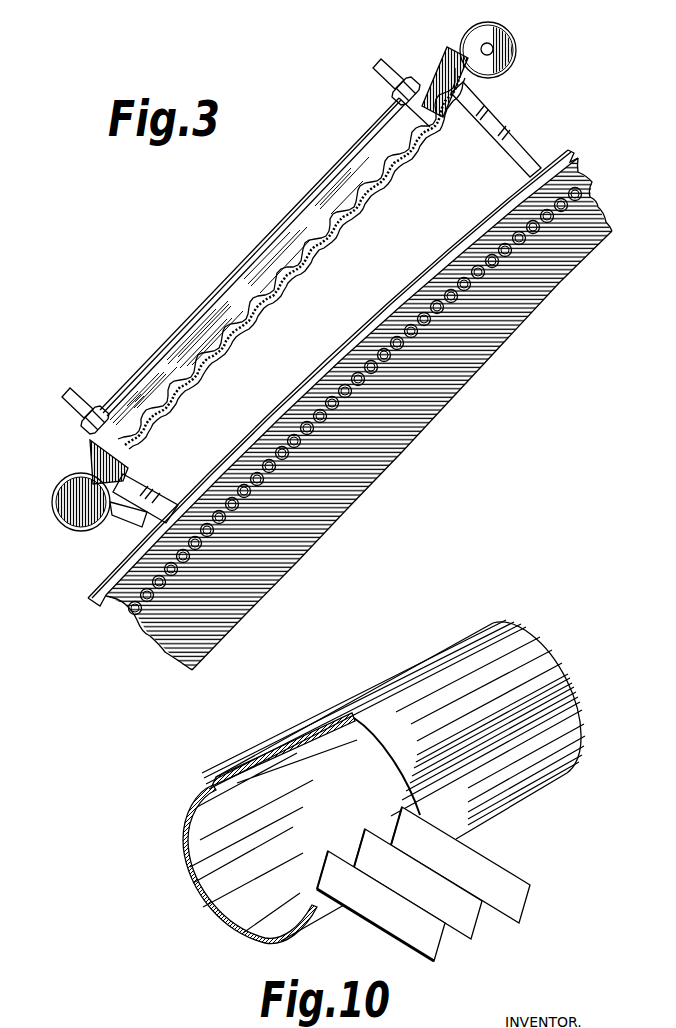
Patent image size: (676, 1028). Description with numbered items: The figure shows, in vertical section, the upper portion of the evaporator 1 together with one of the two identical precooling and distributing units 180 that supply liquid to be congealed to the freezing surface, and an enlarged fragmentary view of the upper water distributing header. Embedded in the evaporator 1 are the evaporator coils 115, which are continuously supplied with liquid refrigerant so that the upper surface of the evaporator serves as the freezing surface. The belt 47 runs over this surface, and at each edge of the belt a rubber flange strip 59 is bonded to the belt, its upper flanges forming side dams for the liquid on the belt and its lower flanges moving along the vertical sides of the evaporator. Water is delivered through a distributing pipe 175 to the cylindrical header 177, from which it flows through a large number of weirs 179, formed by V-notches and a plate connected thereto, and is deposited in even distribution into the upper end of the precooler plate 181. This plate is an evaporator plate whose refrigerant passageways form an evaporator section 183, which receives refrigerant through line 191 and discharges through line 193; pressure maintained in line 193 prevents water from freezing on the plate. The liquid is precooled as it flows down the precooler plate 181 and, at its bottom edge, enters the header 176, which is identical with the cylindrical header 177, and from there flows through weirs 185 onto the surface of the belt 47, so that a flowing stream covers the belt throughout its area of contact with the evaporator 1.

In FIG. 3, the evaporator 1 is at (524, 321).
In FIG. 3, the belt 47 is at (276, 407).
In FIG. 3, the rubber flange strip 59 is at (229, 452).
In FIG. 3, the evaporator coils 115 is at (133, 614).
In FIG. 3, the distributing pipe 175 is at (491, 54).
In FIG. 3, the header 176 is at (61, 482).
In FIG. 3, the cylindrical header 177 is at (509, 30).
In FIG. 10, the cylindrical header 177 is at (188, 812).
In FIG. 3, the weirs 179 is at (456, 58).
In FIG. 10, the weirs 179 is at (381, 832).
In FIG. 3, the precooling and distributing unit 180 is at (244, 248).
In FIG. 3, the precooler plate 181 is at (311, 188).
In FIG. 3, the evaporator section 183 is at (318, 252).
In FIG. 3, the weirs 185 is at (122, 526).
In FIG. 3, the line 191 is at (80, 390).
In FIG. 3, the line 193 is at (388, 62).